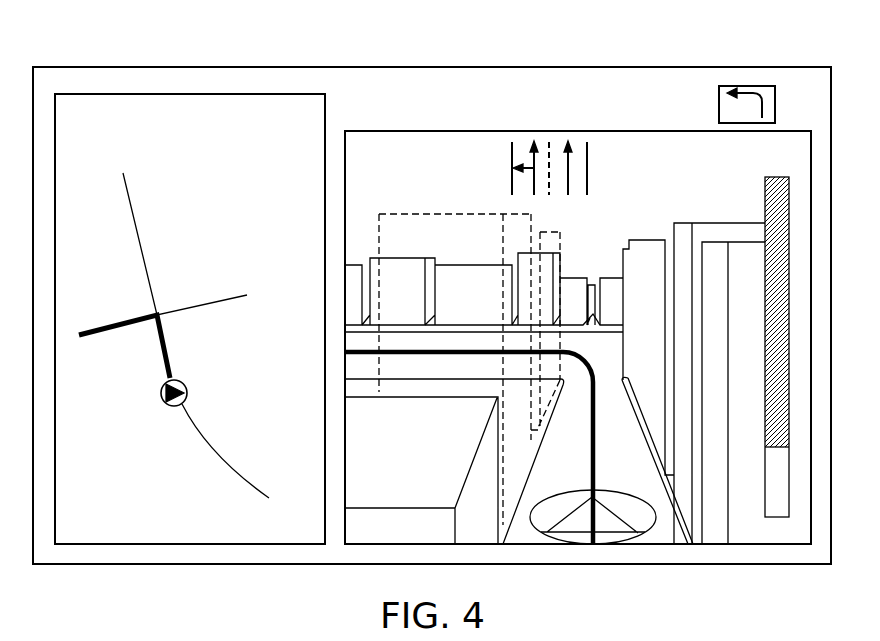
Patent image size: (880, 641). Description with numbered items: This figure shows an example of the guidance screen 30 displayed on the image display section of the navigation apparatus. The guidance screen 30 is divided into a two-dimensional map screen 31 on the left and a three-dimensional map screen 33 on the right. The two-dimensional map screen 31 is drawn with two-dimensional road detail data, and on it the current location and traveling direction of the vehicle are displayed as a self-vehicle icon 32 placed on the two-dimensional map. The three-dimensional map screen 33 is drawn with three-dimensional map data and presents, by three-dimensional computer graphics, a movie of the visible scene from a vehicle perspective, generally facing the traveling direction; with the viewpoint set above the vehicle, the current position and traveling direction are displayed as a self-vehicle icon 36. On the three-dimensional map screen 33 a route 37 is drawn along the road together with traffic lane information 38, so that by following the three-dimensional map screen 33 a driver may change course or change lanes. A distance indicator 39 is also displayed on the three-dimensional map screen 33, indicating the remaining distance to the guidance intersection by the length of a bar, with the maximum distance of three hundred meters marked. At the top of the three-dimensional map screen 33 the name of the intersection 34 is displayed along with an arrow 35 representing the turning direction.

The guidance screen 30 is at (133, 67).
The two-dimensional map screen 31 is at (190, 282).
The self-vehicle icon 32 is at (189, 390).
The 3D map screen 33 is at (363, 131).
The name of the intersection 34 is at (611, 94).
The arrow 35 is at (761, 86).
The self-vehicle icon 36 is at (615, 489).
The route 37 is at (597, 371).
The traffic lane information 38 is at (508, 171).
The distance indicator 39 is at (765, 193).